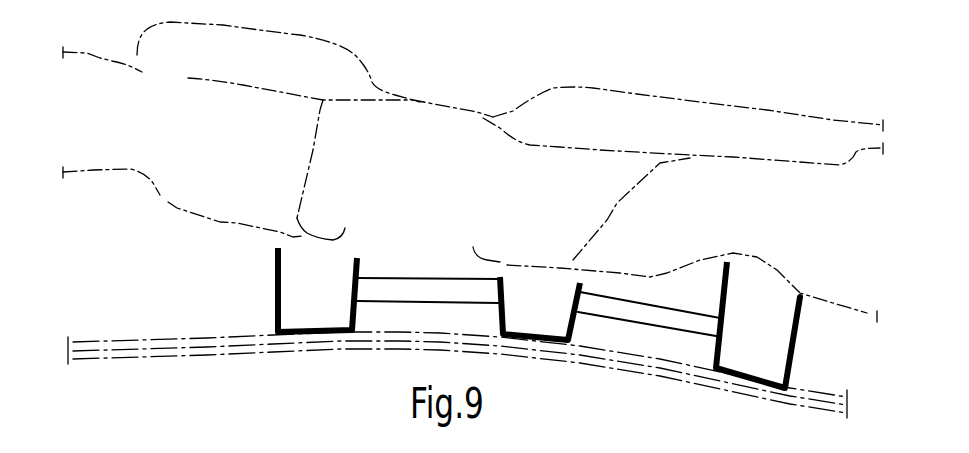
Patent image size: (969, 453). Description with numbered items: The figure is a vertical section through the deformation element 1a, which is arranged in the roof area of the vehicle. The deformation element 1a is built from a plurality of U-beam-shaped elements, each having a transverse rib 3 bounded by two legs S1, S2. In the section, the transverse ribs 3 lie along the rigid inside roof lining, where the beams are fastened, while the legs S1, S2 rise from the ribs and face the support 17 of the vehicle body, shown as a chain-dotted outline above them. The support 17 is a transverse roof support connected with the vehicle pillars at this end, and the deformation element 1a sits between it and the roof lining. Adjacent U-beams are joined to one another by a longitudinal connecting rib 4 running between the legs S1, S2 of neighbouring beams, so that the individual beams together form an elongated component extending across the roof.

The support 17 is at (517, 256).
The deformation element 1a is at (686, 247).
The transverse rib 3 is at (307, 337).
The longitudinal connecting rib 4 is at (614, 325).
The leg S1 is at (273, 288).
The leg S2 is at (360, 262).